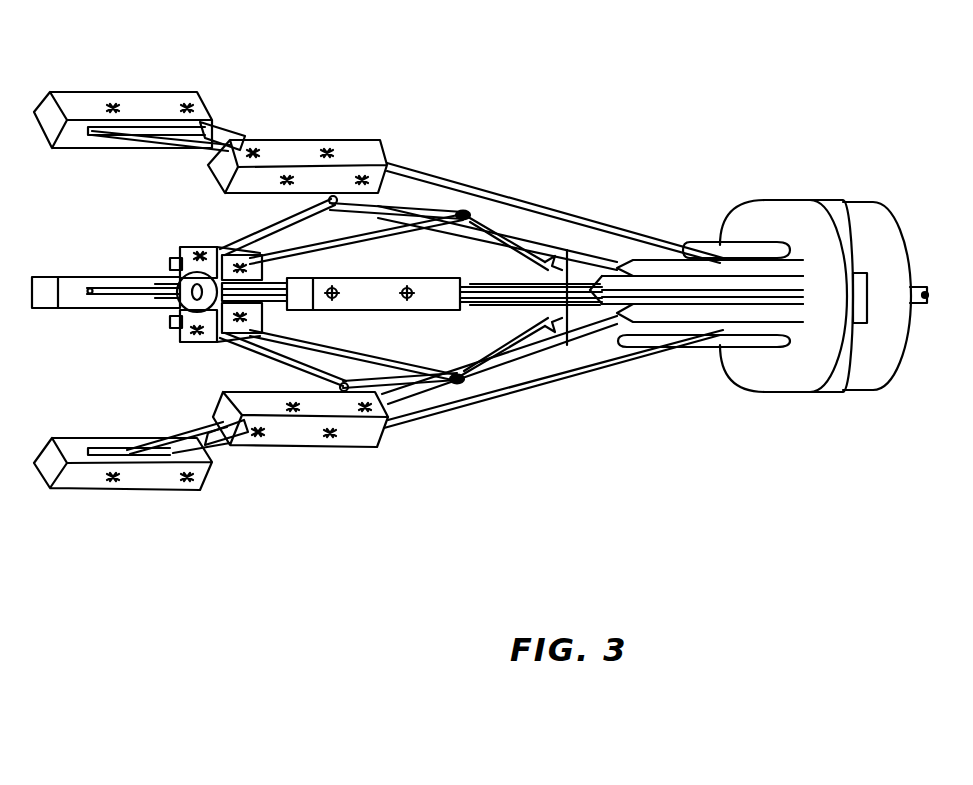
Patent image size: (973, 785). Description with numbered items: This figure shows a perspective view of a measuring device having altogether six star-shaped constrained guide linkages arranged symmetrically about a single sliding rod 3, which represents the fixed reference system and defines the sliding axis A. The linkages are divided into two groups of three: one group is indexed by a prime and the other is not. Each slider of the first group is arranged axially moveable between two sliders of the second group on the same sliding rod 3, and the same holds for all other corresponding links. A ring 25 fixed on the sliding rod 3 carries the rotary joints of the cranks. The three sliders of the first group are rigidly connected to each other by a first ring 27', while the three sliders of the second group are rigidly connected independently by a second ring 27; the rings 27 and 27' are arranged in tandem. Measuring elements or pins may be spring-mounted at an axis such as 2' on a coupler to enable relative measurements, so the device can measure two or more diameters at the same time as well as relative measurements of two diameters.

The axis of coupler of first group 2' is at (369, 269).
The sliding rod 3 is at (515, 290).
The ring 25 is at (175, 258).
The second ring 27 is at (877, 273).
The first ring 27' is at (786, 274).
The sliding axis A is at (926, 294).